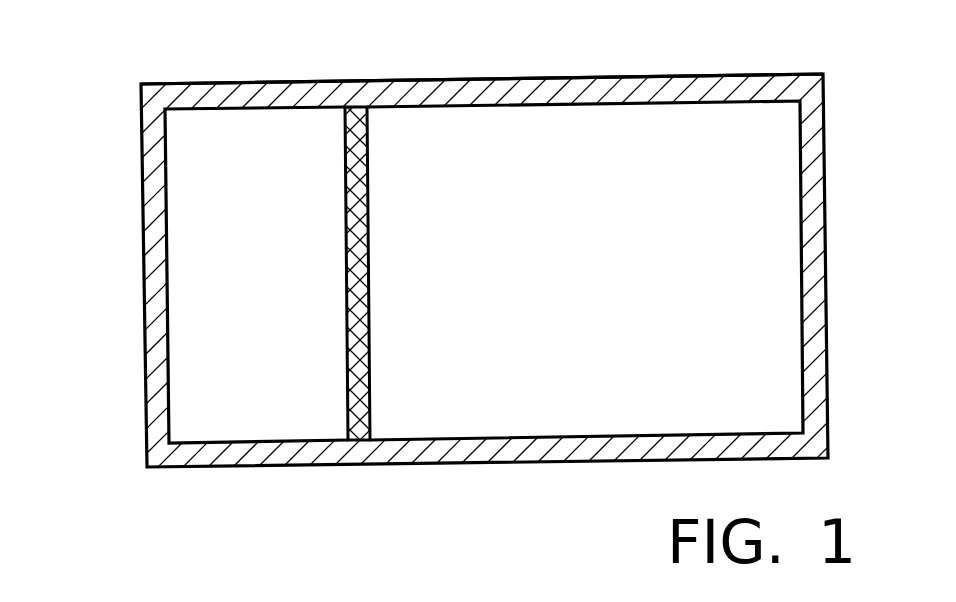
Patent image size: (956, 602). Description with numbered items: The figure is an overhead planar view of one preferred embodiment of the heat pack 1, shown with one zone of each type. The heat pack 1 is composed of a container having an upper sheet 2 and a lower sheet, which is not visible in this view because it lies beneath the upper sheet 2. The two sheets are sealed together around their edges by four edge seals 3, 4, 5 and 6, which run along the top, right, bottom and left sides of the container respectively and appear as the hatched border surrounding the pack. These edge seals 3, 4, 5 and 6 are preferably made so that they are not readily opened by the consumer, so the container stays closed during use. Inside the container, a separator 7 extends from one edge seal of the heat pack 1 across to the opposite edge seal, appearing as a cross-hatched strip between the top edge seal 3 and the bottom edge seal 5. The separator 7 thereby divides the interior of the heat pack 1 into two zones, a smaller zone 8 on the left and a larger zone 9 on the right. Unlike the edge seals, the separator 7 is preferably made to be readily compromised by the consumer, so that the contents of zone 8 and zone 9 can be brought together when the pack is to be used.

The heat pack 1 is at (102, 270).
The upper sheet 2 is at (490, 78).
The edge seal 3 is at (230, 92).
The edge seal 4 is at (817, 213).
The edge seal 5 is at (477, 462).
The edge seal 6 is at (155, 378).
The separator 7 is at (360, 318).
The zone 8 is at (213, 413).
The zone 9 is at (547, 413).